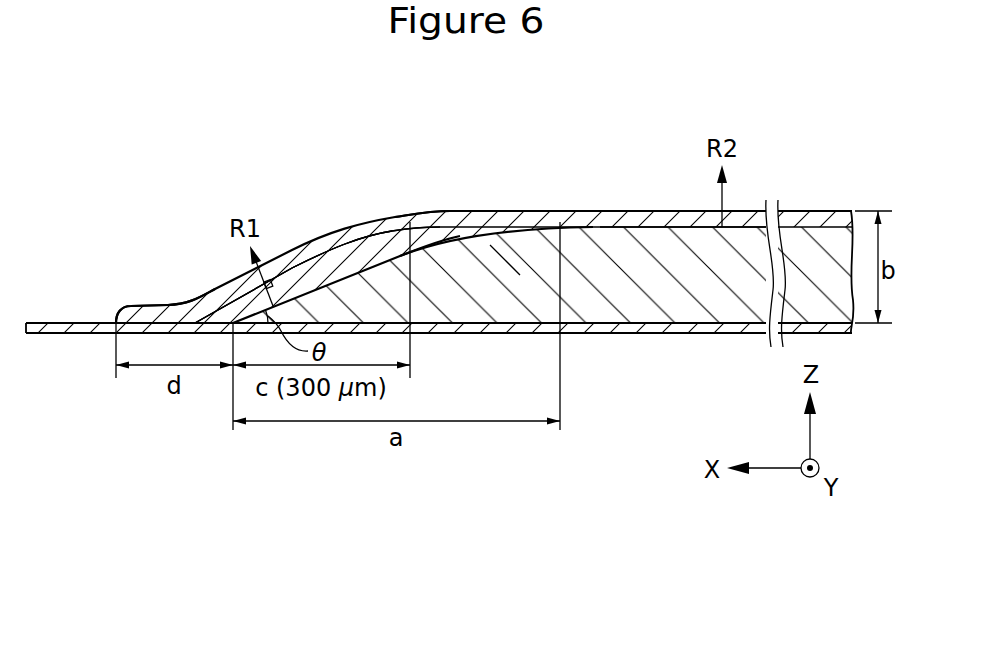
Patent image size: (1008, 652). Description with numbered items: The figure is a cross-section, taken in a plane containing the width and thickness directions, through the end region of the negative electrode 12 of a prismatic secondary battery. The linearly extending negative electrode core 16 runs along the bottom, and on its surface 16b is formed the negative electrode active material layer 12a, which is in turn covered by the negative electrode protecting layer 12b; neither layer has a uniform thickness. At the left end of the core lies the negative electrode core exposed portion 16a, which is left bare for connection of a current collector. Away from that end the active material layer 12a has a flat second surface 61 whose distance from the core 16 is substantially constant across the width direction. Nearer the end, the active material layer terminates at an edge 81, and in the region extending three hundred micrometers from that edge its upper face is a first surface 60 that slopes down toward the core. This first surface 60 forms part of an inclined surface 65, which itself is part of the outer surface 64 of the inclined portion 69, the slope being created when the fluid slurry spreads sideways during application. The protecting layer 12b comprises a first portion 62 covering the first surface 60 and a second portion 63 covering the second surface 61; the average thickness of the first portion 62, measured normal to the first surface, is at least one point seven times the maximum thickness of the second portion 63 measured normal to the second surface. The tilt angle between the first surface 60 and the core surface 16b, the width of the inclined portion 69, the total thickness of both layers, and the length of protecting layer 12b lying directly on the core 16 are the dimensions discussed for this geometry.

The negative electrode 12 is at (484, 227).
The negative electrode active material layer 12a is at (377, 280).
The negative electrode protecting layer 12b is at (450, 222).
The negative electrode core 16 is at (628, 335).
The negative electrode core exposed portion 16a is at (60, 328).
The surface of the negative electrode core 16b is at (541, 300).
The first surface 60 is at (315, 277).
The second surface 61 is at (677, 226).
The first portion 62 is at (347, 260).
The second portion 63 is at (627, 226).
The outer surface 64 is at (423, 247).
The inclined surface 65 is at (408, 222).
The inclined portion 69 is at (500, 257).
The edge 81 is at (233, 318).